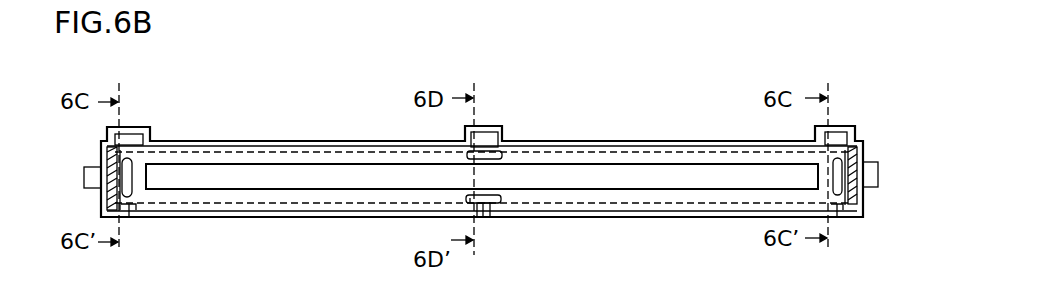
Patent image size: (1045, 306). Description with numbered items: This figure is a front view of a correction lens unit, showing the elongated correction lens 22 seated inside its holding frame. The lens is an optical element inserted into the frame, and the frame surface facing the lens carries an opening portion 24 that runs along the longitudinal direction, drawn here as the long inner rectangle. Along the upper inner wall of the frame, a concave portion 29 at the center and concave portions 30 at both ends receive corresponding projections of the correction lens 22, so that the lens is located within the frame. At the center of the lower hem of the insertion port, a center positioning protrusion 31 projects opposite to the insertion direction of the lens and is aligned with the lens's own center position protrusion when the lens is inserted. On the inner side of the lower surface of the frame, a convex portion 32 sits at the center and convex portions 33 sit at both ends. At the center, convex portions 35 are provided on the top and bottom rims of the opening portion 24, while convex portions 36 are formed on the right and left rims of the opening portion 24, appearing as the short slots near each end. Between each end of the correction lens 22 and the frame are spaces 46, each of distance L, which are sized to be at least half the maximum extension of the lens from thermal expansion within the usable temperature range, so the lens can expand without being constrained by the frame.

The correction lens 22 is at (585, 150).
The opening portion 24 is at (638, 177).
The concave portion 29 is at (486, 140).
The concave portions 30 is at (135, 138).
The center positioning protrusion 31 is at (484, 218).
The convex portion 32 is at (467, 206).
The convex portions 33 is at (129, 210).
The convex portions 35 is at (497, 156).
The convex portions 36 is at (136, 167).
The spaces 46 is at (110, 192).